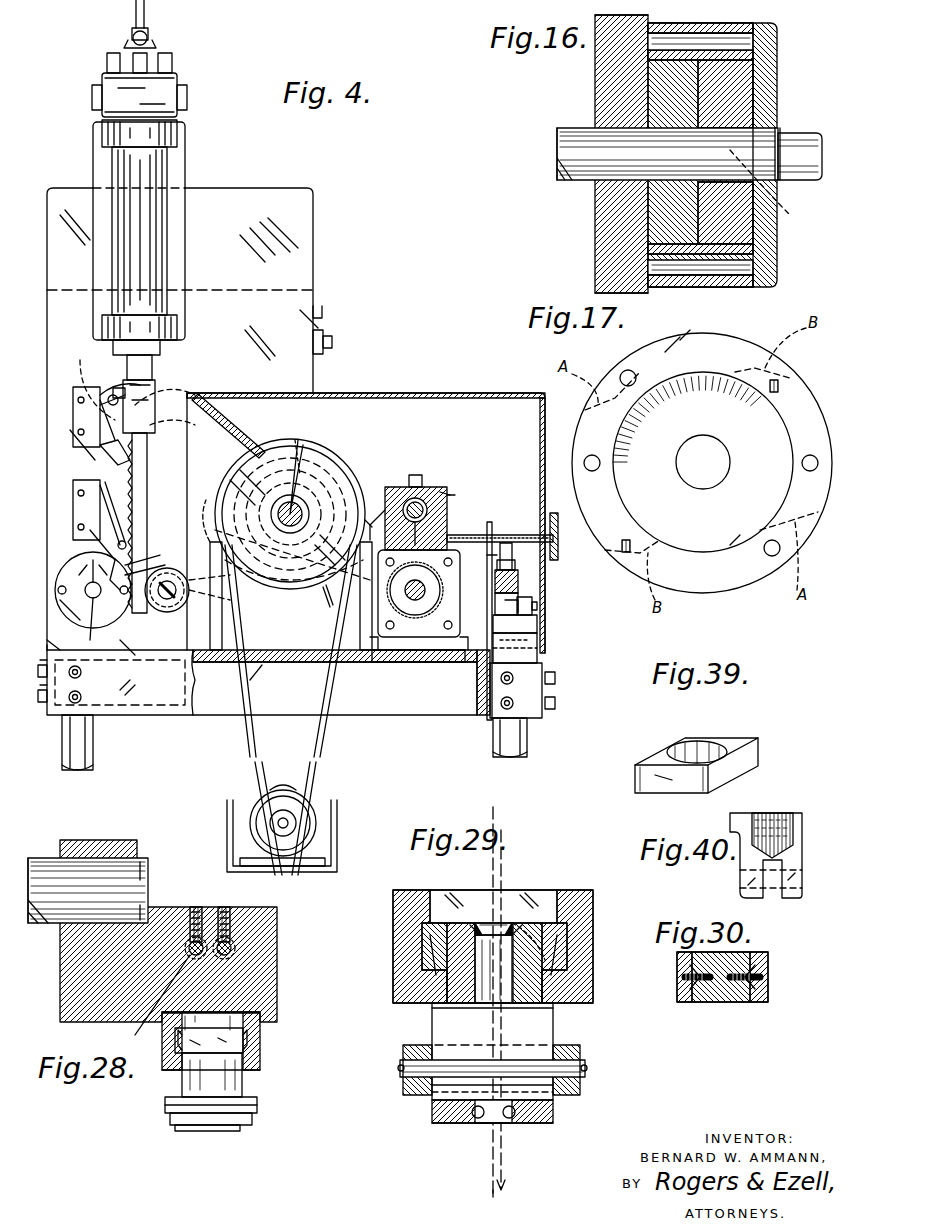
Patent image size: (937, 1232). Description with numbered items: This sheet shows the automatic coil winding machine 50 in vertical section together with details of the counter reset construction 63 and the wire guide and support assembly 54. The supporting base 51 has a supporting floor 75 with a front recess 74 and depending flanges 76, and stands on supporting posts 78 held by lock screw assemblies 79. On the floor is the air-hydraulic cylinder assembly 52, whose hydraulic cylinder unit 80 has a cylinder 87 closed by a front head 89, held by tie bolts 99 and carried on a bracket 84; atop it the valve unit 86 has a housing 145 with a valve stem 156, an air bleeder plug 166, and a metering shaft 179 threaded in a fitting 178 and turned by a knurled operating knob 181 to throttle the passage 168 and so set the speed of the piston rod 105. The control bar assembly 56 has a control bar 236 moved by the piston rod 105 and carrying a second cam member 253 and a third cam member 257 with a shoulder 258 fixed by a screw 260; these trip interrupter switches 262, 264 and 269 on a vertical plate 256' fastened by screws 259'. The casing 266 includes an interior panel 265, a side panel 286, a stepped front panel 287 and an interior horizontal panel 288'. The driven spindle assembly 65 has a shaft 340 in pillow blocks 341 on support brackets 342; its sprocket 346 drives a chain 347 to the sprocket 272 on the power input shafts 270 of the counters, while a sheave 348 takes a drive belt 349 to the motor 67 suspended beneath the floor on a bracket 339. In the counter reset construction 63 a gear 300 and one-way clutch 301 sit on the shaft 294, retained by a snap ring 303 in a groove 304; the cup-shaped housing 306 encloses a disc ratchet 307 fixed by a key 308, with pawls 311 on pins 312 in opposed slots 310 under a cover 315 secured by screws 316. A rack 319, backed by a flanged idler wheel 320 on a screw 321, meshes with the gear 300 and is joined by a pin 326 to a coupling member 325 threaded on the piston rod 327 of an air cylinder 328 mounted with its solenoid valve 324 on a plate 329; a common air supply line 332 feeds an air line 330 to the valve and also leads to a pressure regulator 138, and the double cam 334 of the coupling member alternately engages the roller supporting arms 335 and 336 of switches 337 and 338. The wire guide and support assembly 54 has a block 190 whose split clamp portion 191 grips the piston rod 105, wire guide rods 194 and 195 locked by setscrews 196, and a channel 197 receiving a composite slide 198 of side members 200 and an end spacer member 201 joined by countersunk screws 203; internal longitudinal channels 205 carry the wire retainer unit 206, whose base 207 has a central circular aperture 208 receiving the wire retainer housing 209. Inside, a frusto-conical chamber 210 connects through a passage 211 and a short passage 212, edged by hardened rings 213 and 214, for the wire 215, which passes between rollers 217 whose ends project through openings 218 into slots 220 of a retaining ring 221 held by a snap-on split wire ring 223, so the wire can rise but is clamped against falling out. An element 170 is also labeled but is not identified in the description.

In FIG. 4, the automatic coil winding machine 50 is at (342, 190).
In FIG. 4, the supporting base 51 is at (162, 726).
In FIG. 4, the air-hydraulic cylinder assembly 52 is at (452, 486).
In FIG. 28, the wire guide and support assembly 54 is at (136, 1136).
In FIG. 29, the wire guide and support assembly 54 is at (553, 846).
In FIG. 4, the control bar assembly 56 is at (543, 585).
In FIG. 4, the counter reset construction 63 is at (177, 487).
In FIG. 16, the counter reset construction 63 is at (545, 199).
In FIG. 4, the driven spindle assembly 65 is at (362, 450).
In FIG. 4, the motor 67 is at (294, 795).
In FIG. 4, the front recess 74 is at (520, 690).
In FIG. 4, the supporting floor 75 is at (315, 662).
In FIG. 4, the depending flanges 76 is at (180, 715).
In FIG. 4, the supporting post 78 is at (96, 762).
In FIG. 4, the lock screw assemblies 79 is at (82, 672).
In FIG. 4, the hydraulic cylinder unit 80 is at (385, 606).
In FIG. 4, the bracket 84 is at (418, 656).
In FIG. 4, the valve unit 86 is at (443, 490).
In FIG. 4, the cylinder 87 is at (412, 615).
In FIG. 4, the front head 89 is at (370, 640).
In FIG. 4, the tie bolts 99 is at (400, 640).
In FIG. 4, the piston rod 105 is at (318, 596).
In FIG. 28, the piston rod 105 is at (140, 862).
In FIG. 4, the pressure regulator 138 is at (335, 340).
In FIG. 4, the housing 145 is at (405, 485).
In FIG. 4, the valve stem 156 is at (380, 500).
In FIG. 4, the air bleeder plug 166 is at (435, 490).
In FIG. 4, the passage 168 is at (487, 558).
In FIG. 4, the shaft 170 is at (355, 517).
In FIG. 4, the fitting 178 is at (462, 533).
In FIG. 4, the metering shaft 179 is at (490, 520).
In FIG. 4, the knurled operating knob 181 is at (553, 510).
In FIG. 28, the block 190 is at (260, 978).
In FIG. 28, the split clamp portion 191 is at (112, 840).
In FIG. 28, the wire guide rod 194 is at (157, 998).
In FIG. 28, the wire guide rod 195 is at (231, 948).
In FIG. 28, the setscrews 196 is at (230, 905).
In FIG. 28, the channel 197 is at (262, 1016).
In FIG. 30, the composite slide 198 is at (773, 944).
In FIG. 29, the composite slide 198 is at (386, 944).
In FIG. 30, the side members 200 is at (685, 1002).
In FIG. 28, the side members 200 is at (162, 1068).
In FIG. 29, the side members 200 is at (395, 895).
In FIG. 30, the end spacer member 201 is at (720, 1002).
In FIG. 29, the end spacer member 201 is at (465, 895).
In FIG. 30, the countersunk screws 203 is at (685, 985).
In FIG. 30, the internal longitudinal channel 205 is at (680, 975).
In FIG. 28, the internal longitudinal channel 205 is at (162, 1045).
In FIG. 29, the internal longitudinal channel 205 is at (422, 935).
In FIG. 28, the wire retainer unit 206 is at (256, 1089).
In FIG. 29, the wire retainer unit 206 is at (431, 1127).
In FIG. 39, the base 207 is at (736, 745).
In FIG. 28, the base 207 is at (230, 1042).
In FIG. 29, the base 207 is at (428, 958).
In FIG. 39, the central circular aperture 208 is at (702, 748).
In FIG. 29, the central circular aperture 208 is at (535, 920).
In FIG. 28, the wire retainer housing 209 is at (210, 1132).
In FIG. 29, the wire retainer housing 209 is at (545, 1005).
In FIG. 29, the chamber 210 is at (455, 1027).
In FIG. 29, the passage 211 is at (485, 983).
In FIG. 29, the short passage 212 is at (540, 1125).
In FIG. 29, the ring 213 is at (505, 915).
In FIG. 29, the ring 214 is at (465, 1125).
In FIG. 29, the wire 215 is at (490, 1185).
In FIG. 29, the rollers 217 is at (460, 1070).
In FIG. 29, the openings 218 is at (560, 1095).
In FIG. 29, the slots 220 is at (402, 1080).
In FIG. 28, the retaining ring 221 is at (167, 1118).
In FIG. 29, the retaining ring 221 is at (553, 1098).
In FIG. 28, the snap-on split wire ring 223 is at (162, 1108).
In FIG. 29, the snap-on split wire ring 223 is at (583, 1070).
In FIG. 4, the control bar 236 is at (494, 600).
In FIG. 4, the second cam member 253 is at (494, 580).
In FIG. 4, the vertical plate 256' is at (562, 650).
In FIG. 4, the third cam member 257 is at (538, 610).
In FIG. 4, the shoulder 258 is at (520, 600).
In FIG. 4, the screws 259' is at (473, 682).
In FIG. 4, the screw 260 is at (533, 605).
In FIG. 4, the interrupter switch 262 is at (506, 540).
In FIG. 4, the interrupter switch 264 is at (440, 660).
In FIG. 4, the interior panel 265 is at (220, 410).
In FIG. 4, the casing 266 is at (306, 182).
In FIG. 4, the interrupter switch 269 is at (540, 640).
In FIG. 4, the power input shaft 270 is at (92, 356).
In FIG. 4, the sprocket 272 is at (150, 365).
In FIG. 4, the side panel 286 is at (262, 236).
In FIG. 4, the front panel 287 is at (490, 395).
In FIG. 4, the interior horizontal panel 288' is at (211, 274).
In FIG. 4, the shaft 294 is at (108, 622).
In FIG. 16, the shaft 294 is at (570, 148).
In FIG. 16, the gear 300 is at (608, 80).
In FIG. 4, the one-way clutch 301 is at (150, 572).
In FIG. 16, the one-way clutch 301 is at (678, 306).
In FIG. 16, the snap ring 303 is at (755, 128).
In FIG. 16, the groove 304 is at (786, 160).
In FIG. 16, the cup-shaped housing 306 is at (665, 207).
In FIG. 17, the cup-shaped housing 306 is at (740, 590).
In FIG. 16, the disc ratchet 307 is at (735, 93).
In FIG. 16, the key 308 is at (774, 195).
In FIG. 16, the opposed slots 310 is at (750, 66).
In FIG. 17, the opposed slots 310 is at (725, 345).
In FIG. 16, the pawl 311 is at (725, 25).
In FIG. 16, the pin 312 is at (645, 45).
In FIG. 4, the cover 315 is at (110, 612).
In FIG. 16, the cover 315 is at (770, 240).
In FIG. 4, the screws 316 is at (80, 560).
In FIG. 4, the rack 319 is at (149, 458).
In FIG. 4, the flanged idler wheel 320 is at (178, 592).
In FIG. 4, the screw 321 is at (190, 598).
In FIG. 4, the solenoid valve 324 is at (158, 80).
In FIG. 4, the coupling member 325 is at (156, 395).
In FIG. 40, the coupling member 325 is at (745, 866).
In FIG. 4, the pin 326 is at (175, 430).
In FIG. 4, the piston rod 327 is at (150, 385).
In FIG. 4, the air cylinder 328 is at (145, 167).
In FIG. 4, the plate 329 is at (186, 178).
In FIG. 4, the air line 330 is at (152, 42).
In FIG. 4, the common air supply line 332 is at (133, 8).
In FIG. 4, the double cam 334 is at (150, 390).
In FIG. 40, the double cam 334 is at (750, 822).
In FIG. 4, the roller supporting arm 335 is at (115, 452).
In FIG. 4, the roller supporting arm 336 is at (118, 495).
In FIG. 4, the switch 337 is at (85, 385).
In FIG. 4, the switch 338 is at (78, 492).
In FIG. 4, the bracket 339 is at (338, 803).
In FIG. 4, the shaft 340 is at (315, 466).
In FIG. 4, the pillow blocks 341 is at (208, 520).
In FIG. 4, the support brackets 342 is at (285, 655).
In FIG. 4, the sprocket 346 is at (296, 450).
In FIG. 4, the chain 347 is at (245, 440).
In FIG. 4, the sheave 348 is at (335, 450).
In FIG. 4, the drive belt 349 is at (222, 665).